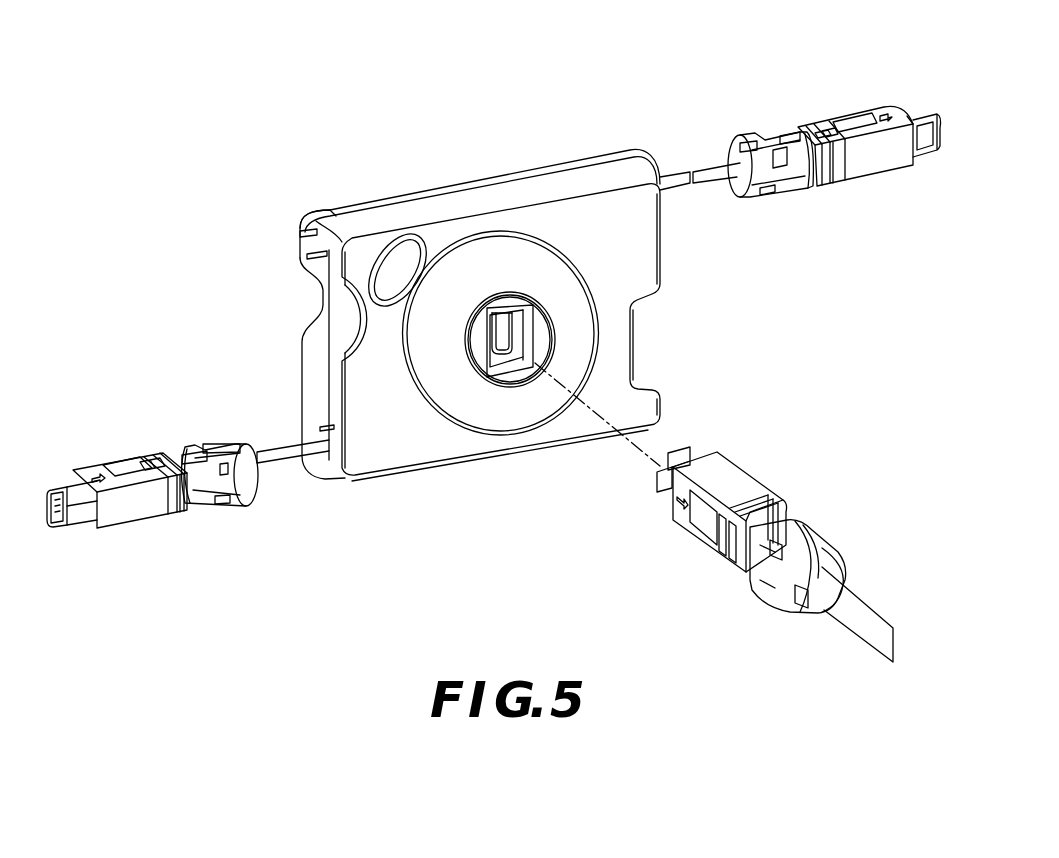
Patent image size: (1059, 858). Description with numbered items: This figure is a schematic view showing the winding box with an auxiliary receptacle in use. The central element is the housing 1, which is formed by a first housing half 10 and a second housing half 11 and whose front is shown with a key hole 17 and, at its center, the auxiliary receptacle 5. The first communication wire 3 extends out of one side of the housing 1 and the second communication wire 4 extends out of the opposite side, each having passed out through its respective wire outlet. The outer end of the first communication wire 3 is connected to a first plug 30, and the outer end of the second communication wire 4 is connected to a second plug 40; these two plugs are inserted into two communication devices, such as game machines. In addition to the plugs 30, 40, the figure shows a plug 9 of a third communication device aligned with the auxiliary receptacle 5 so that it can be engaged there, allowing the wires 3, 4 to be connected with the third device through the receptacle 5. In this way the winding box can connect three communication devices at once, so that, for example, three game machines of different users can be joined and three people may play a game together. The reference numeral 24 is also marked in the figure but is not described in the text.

The housing 1 is at (473, 302).
The first communication wire 3 is at (677, 175).
The second communication wire 4 is at (267, 457).
The auxiliary receptacle 5 is at (505, 347).
The plug 9 is at (737, 490).
The first housing half 10 is at (393, 452).
The second housing half 11 is at (328, 207).
The key hole 17 is at (393, 233).
The central receptacle 24 is at (522, 325).
The first plug 30 is at (857, 127).
The second plug 40 is at (132, 510).